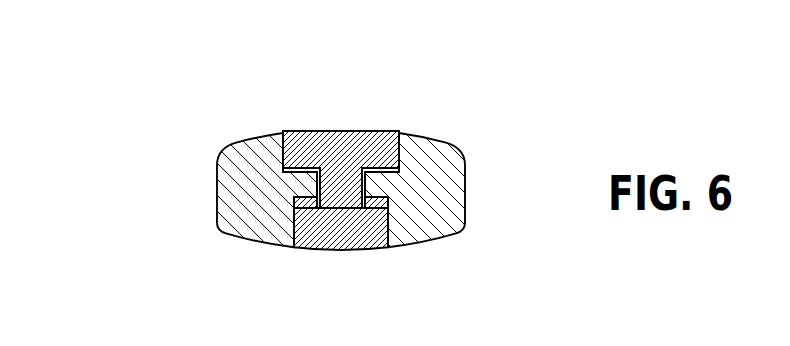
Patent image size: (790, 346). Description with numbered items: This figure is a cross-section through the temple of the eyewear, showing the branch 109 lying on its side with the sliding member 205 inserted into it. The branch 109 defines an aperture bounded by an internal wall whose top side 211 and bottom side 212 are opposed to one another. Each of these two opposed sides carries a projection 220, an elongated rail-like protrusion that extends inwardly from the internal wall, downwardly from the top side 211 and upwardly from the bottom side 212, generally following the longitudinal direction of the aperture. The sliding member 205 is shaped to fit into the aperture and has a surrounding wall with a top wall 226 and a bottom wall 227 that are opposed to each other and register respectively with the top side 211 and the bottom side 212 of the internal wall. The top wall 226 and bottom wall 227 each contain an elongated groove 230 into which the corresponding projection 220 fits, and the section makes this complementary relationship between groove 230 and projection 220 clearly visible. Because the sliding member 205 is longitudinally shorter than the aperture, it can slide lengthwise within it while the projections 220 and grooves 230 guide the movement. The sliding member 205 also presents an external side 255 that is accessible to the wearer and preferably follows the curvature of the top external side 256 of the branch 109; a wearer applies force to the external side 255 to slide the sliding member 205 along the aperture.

The sliding member 205 is at (315, 140).
The external side 255 is at (386, 136).
The top external side 256 is at (245, 139).
The branch 109 is at (445, 160).
The bottom side 212 is at (318, 181).
The top side 211 is at (365, 181).
The bottom wall 227 is at (307, 198).
The top wall 226 is at (373, 198).
The projection 220 is at (303, 209).
The elongated groove 230 is at (363, 205).